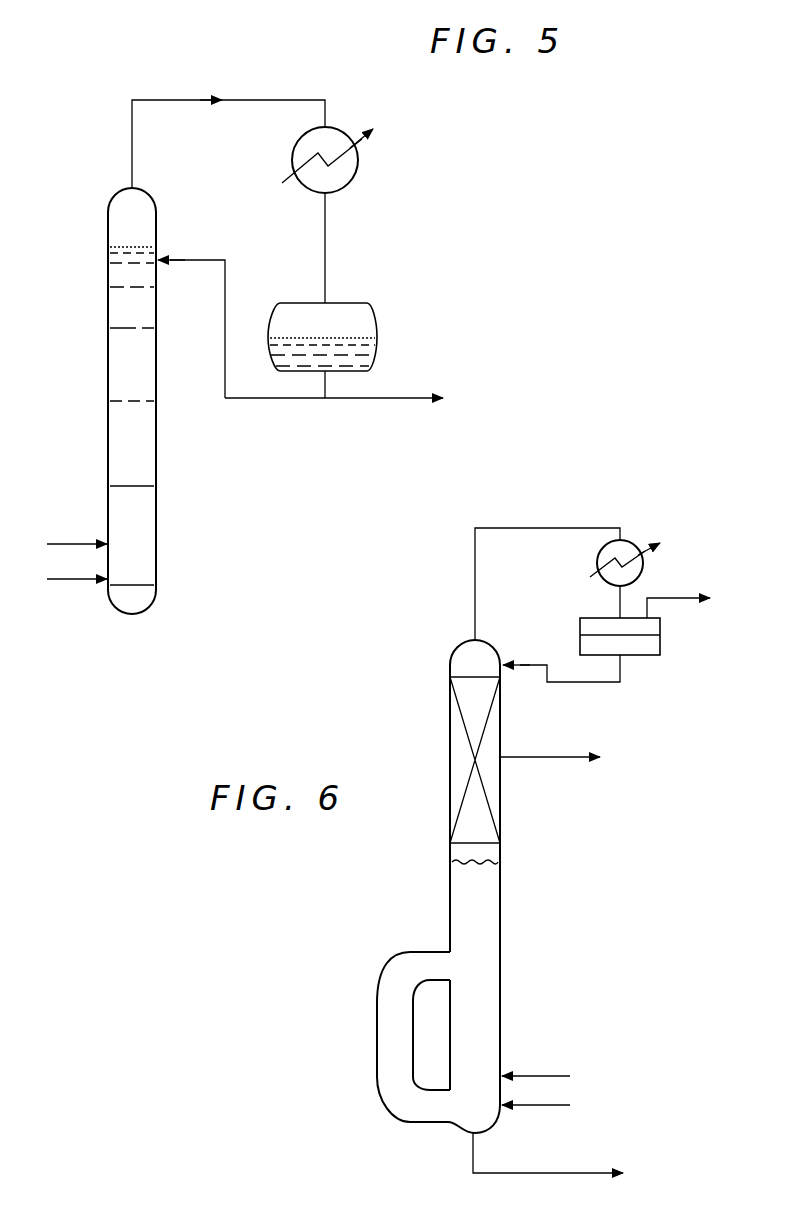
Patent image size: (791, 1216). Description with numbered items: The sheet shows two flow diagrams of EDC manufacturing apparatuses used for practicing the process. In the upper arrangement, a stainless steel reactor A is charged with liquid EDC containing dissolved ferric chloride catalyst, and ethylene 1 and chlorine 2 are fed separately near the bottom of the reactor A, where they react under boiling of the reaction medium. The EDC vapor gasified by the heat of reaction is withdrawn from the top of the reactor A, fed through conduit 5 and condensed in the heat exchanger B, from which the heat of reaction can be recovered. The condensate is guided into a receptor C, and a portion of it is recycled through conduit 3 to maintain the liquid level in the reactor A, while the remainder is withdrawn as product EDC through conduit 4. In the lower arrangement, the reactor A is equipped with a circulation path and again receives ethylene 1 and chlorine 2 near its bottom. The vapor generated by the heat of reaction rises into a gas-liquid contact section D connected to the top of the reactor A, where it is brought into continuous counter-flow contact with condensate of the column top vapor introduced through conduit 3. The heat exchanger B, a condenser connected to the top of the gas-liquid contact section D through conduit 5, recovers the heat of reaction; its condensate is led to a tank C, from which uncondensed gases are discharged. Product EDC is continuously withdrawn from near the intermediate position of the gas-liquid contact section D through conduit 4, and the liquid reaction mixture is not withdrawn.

In FIG. 5, the ethylene 1 is at (66, 583).
In FIG. 6, the ethylene 1 is at (552, 1107).
In FIG. 5, the chlorine 2 is at (66, 543).
In FIG. 6, the chlorine 2 is at (552, 1074).
In FIG. 5, the conduit 3 is at (205, 258).
In FIG. 6, the conduit 3 is at (575, 684).
In FIG. 5, the conduit 4 is at (386, 402).
In FIG. 6, the conduit 4 is at (568, 759).
In FIG. 5, the conduit 5 is at (183, 99).
In FIG. 6, the conduit 5 is at (563, 527).
In FIG. 5, the reactor A is at (122, 440).
In FIG. 6, the reactor A is at (465, 931).
In FIG. 5, the heat exchanger B is at (360, 164).
In FIG. 6, the heat exchanger B is at (633, 546).
In FIG. 5, the receptor C is at (372, 318).
In FIG. 6, the receptor C is at (650, 657).
In FIG. 6, the gas-liquid contact section D is at (456, 727).